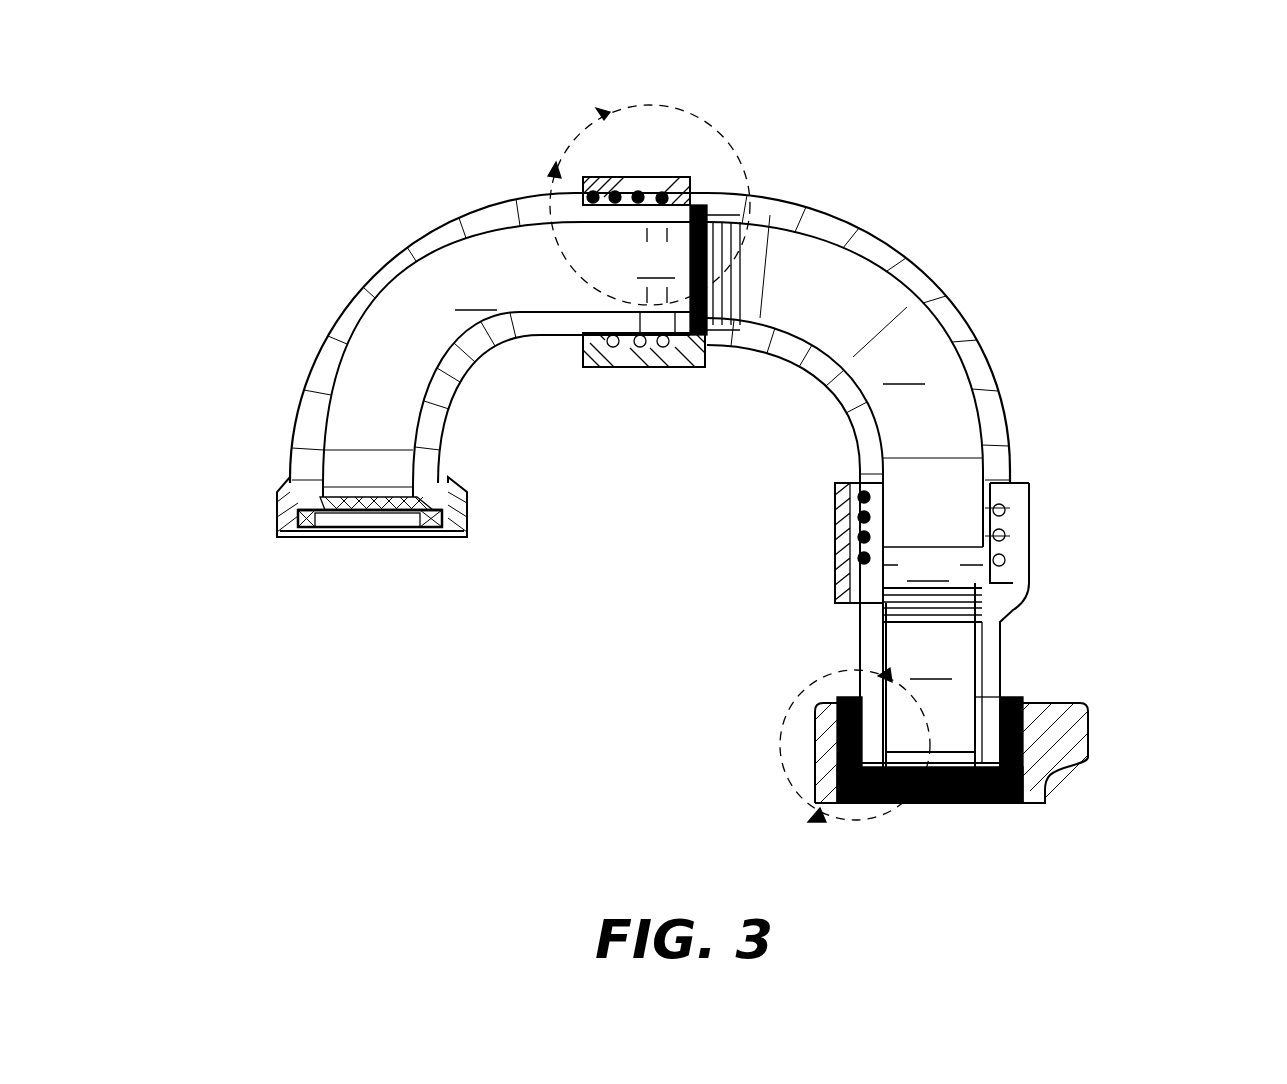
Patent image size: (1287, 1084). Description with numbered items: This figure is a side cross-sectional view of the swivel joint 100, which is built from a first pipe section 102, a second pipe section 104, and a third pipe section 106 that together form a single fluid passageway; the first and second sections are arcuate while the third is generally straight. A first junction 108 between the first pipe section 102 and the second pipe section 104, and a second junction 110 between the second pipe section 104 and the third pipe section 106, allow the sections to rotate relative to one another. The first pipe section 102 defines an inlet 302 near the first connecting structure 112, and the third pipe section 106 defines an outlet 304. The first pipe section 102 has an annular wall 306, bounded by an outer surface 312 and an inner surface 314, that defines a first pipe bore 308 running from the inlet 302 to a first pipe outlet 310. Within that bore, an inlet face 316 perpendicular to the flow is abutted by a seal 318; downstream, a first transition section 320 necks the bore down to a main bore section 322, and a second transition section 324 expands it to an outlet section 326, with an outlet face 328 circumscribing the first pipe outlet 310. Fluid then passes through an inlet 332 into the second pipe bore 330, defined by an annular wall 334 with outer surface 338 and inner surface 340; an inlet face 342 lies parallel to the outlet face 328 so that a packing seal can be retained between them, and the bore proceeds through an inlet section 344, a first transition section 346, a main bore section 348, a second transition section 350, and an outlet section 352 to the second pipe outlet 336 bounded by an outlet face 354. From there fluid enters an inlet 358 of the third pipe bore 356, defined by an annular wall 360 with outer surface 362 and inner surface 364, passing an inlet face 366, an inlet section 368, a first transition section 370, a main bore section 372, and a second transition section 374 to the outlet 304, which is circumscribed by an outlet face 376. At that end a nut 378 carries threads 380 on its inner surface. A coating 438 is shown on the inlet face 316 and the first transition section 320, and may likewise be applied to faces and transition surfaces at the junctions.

The swivel joint 100 is at (1075, 131).
The first pipe section 102 is at (318, 198).
The second pipe section 104 is at (1062, 325).
The third pipe section 106 is at (1080, 612).
The first junction 108 is at (512, 130).
The second junction 110 is at (1080, 455).
The first connecting structure 112 is at (278, 500).
The inlet 302 is at (452, 610).
The outlet 304 is at (897, 828).
The annular wall 306 is at (370, 390).
The first pipe bore 308 is at (476, 297).
The first pipe outlet 310 is at (1000, 513).
The outer surface 312 is at (303, 362).
The inner surface 314 is at (433, 390).
The inlet face 316 is at (298, 501).
The seal 318 is at (403, 522).
The first transition section 320 is at (412, 500).
The main bore section 322 is at (370, 390).
The second transition section 324 is at (650, 307).
The outlet section 326 is at (683, 310).
The outlet face 328 is at (703, 200).
The second pipe bore 330 is at (933, 407).
The inlet 332 is at (735, 268).
The annular wall 334 is at (942, 318).
The second pipe outlet 336 is at (920, 537).
The outer surface 338 is at (930, 277).
The inner surface 340 is at (810, 330).
The inlet face 342 is at (703, 213).
The inlet section 344 is at (715, 330).
The first transition section 346 is at (722, 320).
The main bore section 348 is at (913, 408).
The second transition section 350 is at (885, 555).
The outlet section 352 is at (880, 580).
The outlet face 354 is at (872, 593).
The third pipe bore 356 is at (930, 707).
The inlet 358 is at (970, 632).
The annular wall 360 is at (873, 667).
The outer surface 362 is at (1000, 660).
The inner surface 364 is at (947, 693).
The inlet face 366 is at (870, 610).
The inlet section 368 is at (880, 617).
The first transition section 370 is at (880, 623).
The main bore section 372 is at (1013, 703).
The second transition section 374 is at (910, 800).
The outlet face 376 is at (997, 800).
The nut 378 is at (1073, 747).
The threads 380 is at (1027, 773).
The coating 438 is at (295, 556).